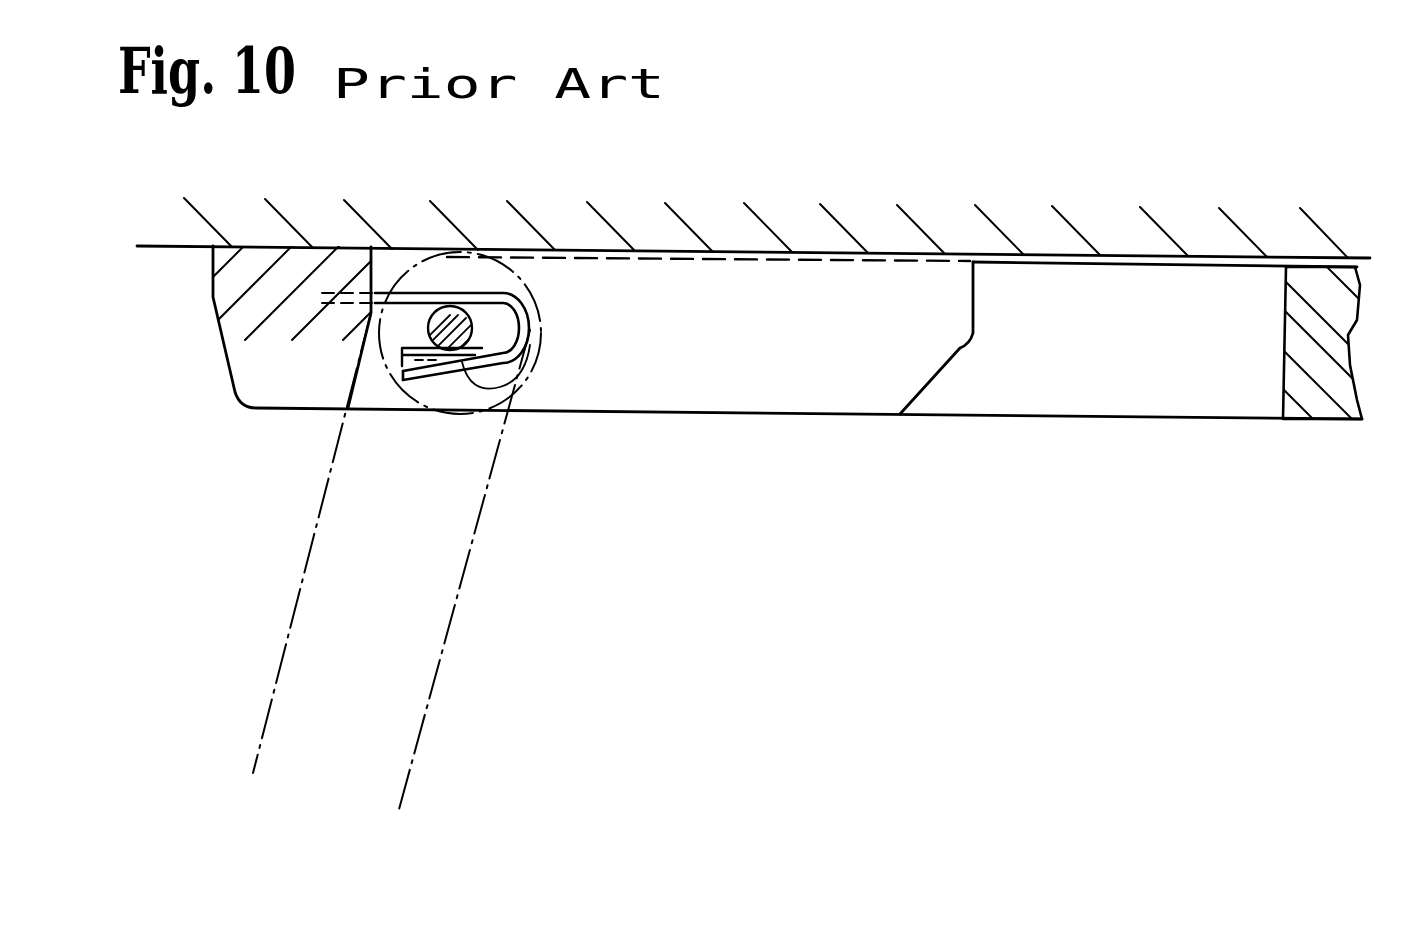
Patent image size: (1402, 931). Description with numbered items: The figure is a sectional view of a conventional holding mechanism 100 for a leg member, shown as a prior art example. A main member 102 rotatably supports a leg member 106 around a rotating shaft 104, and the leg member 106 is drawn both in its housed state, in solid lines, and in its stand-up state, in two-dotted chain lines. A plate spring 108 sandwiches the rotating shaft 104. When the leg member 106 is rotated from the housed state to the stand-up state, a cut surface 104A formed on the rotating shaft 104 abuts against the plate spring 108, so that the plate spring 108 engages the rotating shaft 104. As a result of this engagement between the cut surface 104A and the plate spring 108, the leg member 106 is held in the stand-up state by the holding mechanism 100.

The holding mechanism 100 is at (758, 474).
The main member 102 is at (680, 413).
The rotating shaft 104 is at (428, 476).
The cut surface 104A is at (557, 355).
The leg member 106 is at (1133, 418).
The plate spring 108 is at (414, 388).